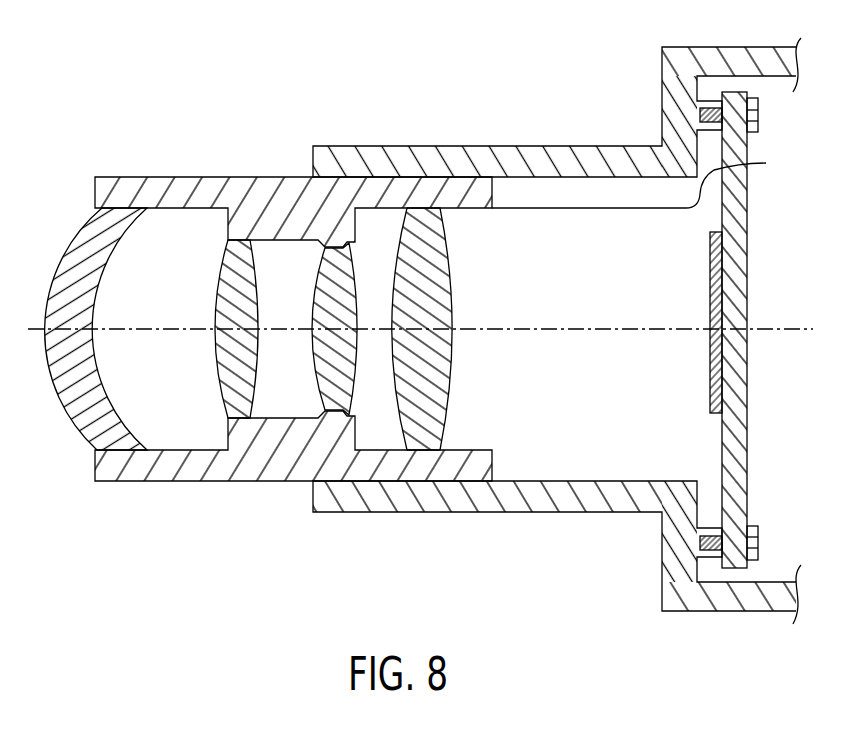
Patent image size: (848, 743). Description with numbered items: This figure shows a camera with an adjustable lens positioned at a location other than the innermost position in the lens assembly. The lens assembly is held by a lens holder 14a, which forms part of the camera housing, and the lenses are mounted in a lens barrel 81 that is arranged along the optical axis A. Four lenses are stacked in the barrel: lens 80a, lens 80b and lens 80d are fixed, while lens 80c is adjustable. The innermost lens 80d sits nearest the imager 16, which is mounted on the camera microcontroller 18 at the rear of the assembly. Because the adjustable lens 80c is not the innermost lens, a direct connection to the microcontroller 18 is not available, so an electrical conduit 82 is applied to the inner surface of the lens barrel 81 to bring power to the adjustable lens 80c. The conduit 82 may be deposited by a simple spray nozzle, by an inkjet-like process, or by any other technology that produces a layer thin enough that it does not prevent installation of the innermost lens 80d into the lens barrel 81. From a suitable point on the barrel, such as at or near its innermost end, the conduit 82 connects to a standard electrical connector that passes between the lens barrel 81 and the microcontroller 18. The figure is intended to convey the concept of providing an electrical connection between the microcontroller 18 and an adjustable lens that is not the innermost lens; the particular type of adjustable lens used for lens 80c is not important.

The lens holder 14a is at (542, 158).
The electrical conduit 82 is at (480, 208).
The camera microcontroller 18 is at (748, 207).
The imager 16 is at (717, 287).
The lens barrel 81 is at (144, 466).
The lens 80a is at (75, 389).
The lens 80b is at (230, 375).
The adjustable lens 80c is at (316, 380).
The innermost lens 80d is at (434, 363).
The optical axis A is at (806, 320).